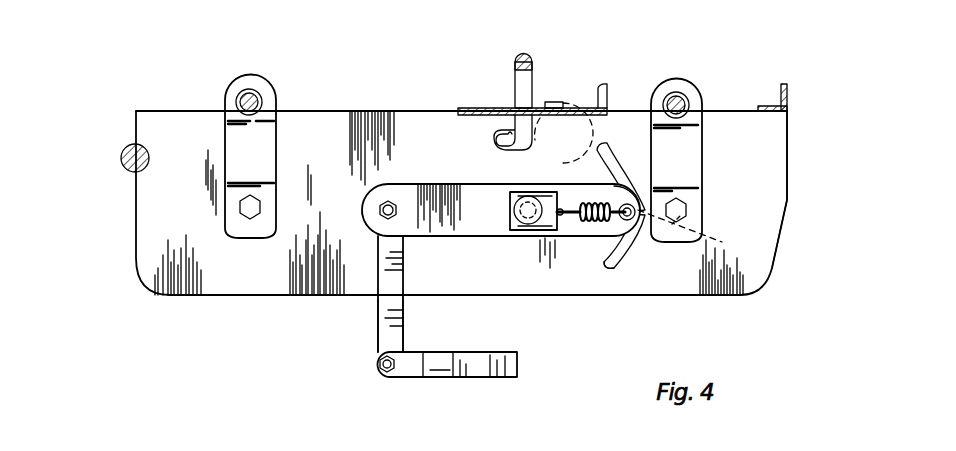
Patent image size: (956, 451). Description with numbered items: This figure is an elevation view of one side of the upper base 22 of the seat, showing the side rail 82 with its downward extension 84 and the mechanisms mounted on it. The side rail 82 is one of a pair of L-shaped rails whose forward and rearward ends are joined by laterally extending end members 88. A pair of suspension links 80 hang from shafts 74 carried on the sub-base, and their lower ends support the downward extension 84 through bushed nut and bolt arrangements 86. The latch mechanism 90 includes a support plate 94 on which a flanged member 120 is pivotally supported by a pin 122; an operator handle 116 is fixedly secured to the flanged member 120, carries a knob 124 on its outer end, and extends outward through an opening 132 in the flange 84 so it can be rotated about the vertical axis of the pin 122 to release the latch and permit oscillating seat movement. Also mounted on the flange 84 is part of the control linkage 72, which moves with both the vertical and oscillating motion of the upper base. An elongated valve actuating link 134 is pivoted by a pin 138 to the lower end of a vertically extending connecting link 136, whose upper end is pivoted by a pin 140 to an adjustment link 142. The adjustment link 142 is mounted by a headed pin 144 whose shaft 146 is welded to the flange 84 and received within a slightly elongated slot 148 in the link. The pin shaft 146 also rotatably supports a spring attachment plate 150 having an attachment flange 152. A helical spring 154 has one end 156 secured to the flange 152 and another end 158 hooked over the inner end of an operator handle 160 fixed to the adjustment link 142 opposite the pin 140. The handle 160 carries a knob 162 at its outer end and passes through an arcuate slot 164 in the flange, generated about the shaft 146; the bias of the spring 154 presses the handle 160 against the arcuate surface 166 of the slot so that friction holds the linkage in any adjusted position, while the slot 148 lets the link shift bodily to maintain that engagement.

The base 22 is at (790, 158).
The control linkage 72 is at (376, 333).
The shaft 74 is at (258, 100).
The suspension link 80 is at (277, 160).
The side rail 82 is at (165, 110).
The downward extension 84 is at (145, 237).
The bushed nut and bolt arrangement 86 is at (250, 214).
The end member 88 is at (122, 168).
The latch mechanism 90 is at (505, 68).
The support plate 94 is at (468, 110).
The operator handle 116 is at (522, 58).
The flanged member 120 is at (548, 100).
The pin 122 is at (601, 96).
The knob 124 is at (592, 125).
The opening 132 is at (498, 140).
The valve actuating link 134 is at (468, 368).
The connecting link 136 is at (400, 332).
The pin 138 is at (388, 374).
The pin 140 is at (378, 216).
The adjustment link 142 is at (408, 186).
The headed pin 144 is at (510, 218).
The pin shaft 146 is at (512, 200).
The slot 148 is at (535, 192).
The spring attachment plate 150 is at (522, 230).
The attachment flange 152 is at (560, 236).
The helical spring 154 is at (590, 204).
The spring end 156 is at (566, 236).
The spring end 158 is at (633, 185).
The operator handle 160 is at (636, 238).
The knob 162 is at (698, 231).
The arcuate slot 164 is at (612, 266).
The arcuate surface 166 is at (620, 168).